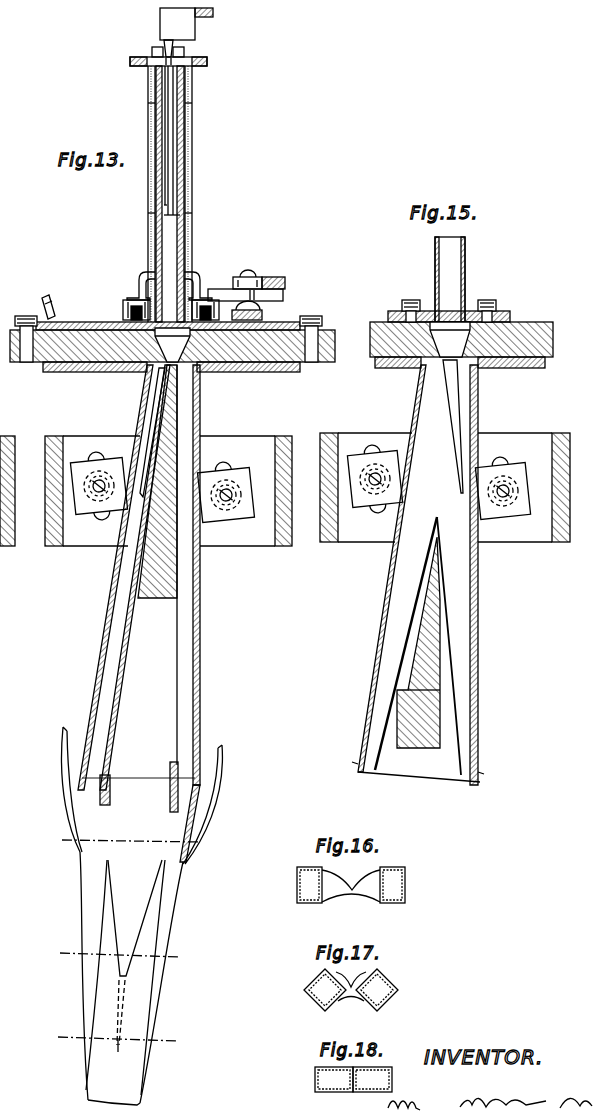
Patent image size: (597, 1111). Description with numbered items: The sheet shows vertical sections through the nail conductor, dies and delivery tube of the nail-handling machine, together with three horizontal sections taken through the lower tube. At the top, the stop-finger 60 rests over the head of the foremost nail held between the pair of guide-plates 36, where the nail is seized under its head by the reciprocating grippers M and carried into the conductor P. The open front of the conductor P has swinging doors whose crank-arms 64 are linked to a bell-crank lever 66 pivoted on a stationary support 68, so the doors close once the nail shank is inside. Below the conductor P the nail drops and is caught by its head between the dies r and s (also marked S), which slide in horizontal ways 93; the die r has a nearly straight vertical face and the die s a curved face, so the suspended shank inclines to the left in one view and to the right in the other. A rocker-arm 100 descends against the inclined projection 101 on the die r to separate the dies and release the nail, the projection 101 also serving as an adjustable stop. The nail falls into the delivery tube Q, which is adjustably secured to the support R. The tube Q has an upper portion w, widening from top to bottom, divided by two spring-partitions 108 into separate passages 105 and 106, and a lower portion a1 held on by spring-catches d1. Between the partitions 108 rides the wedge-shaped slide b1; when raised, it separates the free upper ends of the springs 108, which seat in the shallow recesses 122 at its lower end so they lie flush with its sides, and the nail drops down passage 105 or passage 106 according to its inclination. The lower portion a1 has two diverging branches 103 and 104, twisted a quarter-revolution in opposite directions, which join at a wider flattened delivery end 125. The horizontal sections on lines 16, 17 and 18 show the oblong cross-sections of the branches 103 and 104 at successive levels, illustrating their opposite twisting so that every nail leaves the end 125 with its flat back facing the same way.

In FIG. 13, the stop-finger 60 is at (186, 32).
In FIG. 13, the guide-plates 36 is at (152, 51).
In FIG. 13, the grippers M is at (207, 62).
In FIG. 13, the conductor P is at (172, 234).
In FIG. 15, the conductor P is at (455, 268).
In FIG. 13, the crank-arms 64 is at (146, 275).
In FIG. 13, the bell-crank lever 66 is at (278, 277).
In FIG. 13, the stationary support 68 is at (262, 314).
In FIG. 13, the rocker-arm 100 is at (49, 297).
In FIG. 13, the inclined projection 101 is at (44, 299).
In FIG. 13, the die r is at (95, 338).
In FIG. 15, the die r is at (390, 335).
In FIG. 13, the horizontal ways 93 is at (95, 372).
In FIG. 15, the horizontal ways 93 is at (515, 369).
In FIG. 13, the die S is at (283, 362).
In FIG. 15, the die s is at (548, 325).
In FIG. 13, the support R is at (270, 432).
In FIG. 15, the support R is at (560, 433).
In FIG. 13, the passage 105 is at (104, 636).
In FIG. 13, the wedge-shaped slide b1 is at (180, 573).
In FIG. 15, the wedge-shaped slide b1 is at (440, 624).
In FIG. 13, the spring-partitions 108 is at (128, 676).
In FIG. 15, the spring-partitions 108 is at (400, 653).
In FIG. 13, the upper portion w is at (192, 588).
In FIG. 15, the upper portion w is at (447, 432).
In FIG. 13, the passage 106 is at (192, 636).
In FIG. 15, the passage 106 is at (470, 681).
In FIG. 13, the spring-catches d1 is at (241, 766).
In FIG. 13, the delivery tube Q is at (110, 598).
In FIG. 15, the delivery tube Q is at (478, 589).
In FIG. 13, the branch 103 is at (82, 911).
In FIG. 16, the branch 103 is at (304, 887).
In FIG. 17, the branch 103 is at (306, 990).
In FIG. 18, the branch 103 is at (322, 1080).
In FIG. 13, the branch 104 is at (178, 911).
In FIG. 16, the branch 104 is at (398, 887).
In FIG. 17, the branch 104 is at (395, 990).
In FIG. 18, the branch 104 is at (380, 1079).
In FIG. 13, the lower portion a1 is at (135, 956).
In FIG. 16, the lower portion a1 is at (351, 895).
In FIG. 17, the lower portion a1 is at (351, 997).
In FIG. 18, the lower portion a1 is at (354, 1101).
In FIG. 13, the section line 16 is at (135, 843).
In FIG. 13, the section line 17 is at (119, 954).
In FIG. 13, the section line 18 is at (111, 1039).
In FIG. 13, the delivery end 125 is at (108, 1072).
In FIG. 15, the recesses 122 is at (400, 734).